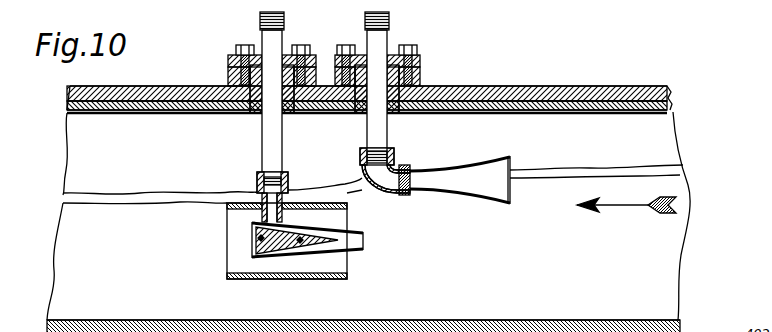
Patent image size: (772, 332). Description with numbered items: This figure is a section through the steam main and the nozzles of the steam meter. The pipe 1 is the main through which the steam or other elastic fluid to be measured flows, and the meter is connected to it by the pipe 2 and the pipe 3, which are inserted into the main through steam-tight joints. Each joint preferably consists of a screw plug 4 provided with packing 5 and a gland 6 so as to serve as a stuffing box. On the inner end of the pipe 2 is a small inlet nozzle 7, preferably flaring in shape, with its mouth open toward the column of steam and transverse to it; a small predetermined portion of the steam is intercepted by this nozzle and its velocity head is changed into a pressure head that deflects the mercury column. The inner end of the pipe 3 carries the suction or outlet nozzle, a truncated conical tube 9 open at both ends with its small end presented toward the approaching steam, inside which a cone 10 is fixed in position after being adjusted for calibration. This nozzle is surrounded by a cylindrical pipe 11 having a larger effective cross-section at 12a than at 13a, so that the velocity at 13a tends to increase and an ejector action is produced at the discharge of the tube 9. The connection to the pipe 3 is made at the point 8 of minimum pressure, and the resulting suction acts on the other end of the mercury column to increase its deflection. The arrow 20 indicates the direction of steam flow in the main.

The pipe 1 is at (369, 92).
The pipe 2 is at (388, 23).
The pipe 3 is at (283, 23).
The screw plug 4 is at (358, 115).
The packing 5 is at (254, 116).
The gland 6 is at (362, 53).
The inlet nozzle 7 is at (440, 199).
The point of minimum pressure 8 is at (284, 212).
The truncated conical tube 9 is at (322, 234).
The cone 10 is at (332, 247).
The cylindrical pipe 11 is at (304, 279).
The larger effective cross-section 12a is at (338, 217).
The smaller effective cross-section 13a is at (258, 253).
The flow direction 20 is at (306, 208).